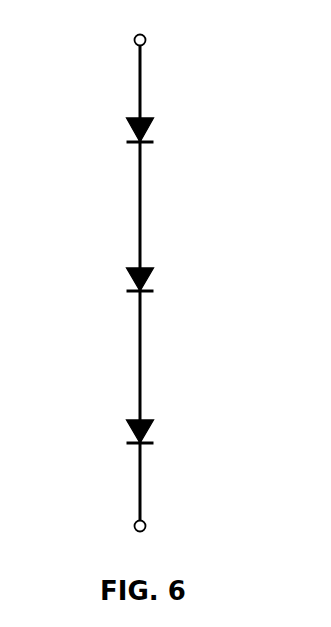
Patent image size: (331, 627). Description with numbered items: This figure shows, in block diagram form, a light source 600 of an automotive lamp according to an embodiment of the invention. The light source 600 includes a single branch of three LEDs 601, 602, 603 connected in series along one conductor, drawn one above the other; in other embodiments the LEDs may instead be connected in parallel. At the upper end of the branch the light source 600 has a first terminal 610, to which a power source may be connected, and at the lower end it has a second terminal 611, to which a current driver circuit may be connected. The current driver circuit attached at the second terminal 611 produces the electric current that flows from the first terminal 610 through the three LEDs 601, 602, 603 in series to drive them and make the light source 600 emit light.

The light source 600 is at (266, 211).
The LED 601 is at (119, 127).
The LED 602 is at (121, 281).
The LED 603 is at (121, 431).
The first terminal 610 is at (166, 35).
The second terminal 611 is at (163, 523).